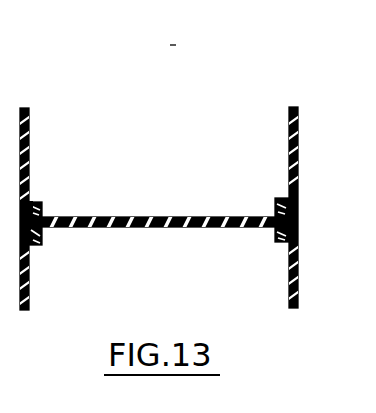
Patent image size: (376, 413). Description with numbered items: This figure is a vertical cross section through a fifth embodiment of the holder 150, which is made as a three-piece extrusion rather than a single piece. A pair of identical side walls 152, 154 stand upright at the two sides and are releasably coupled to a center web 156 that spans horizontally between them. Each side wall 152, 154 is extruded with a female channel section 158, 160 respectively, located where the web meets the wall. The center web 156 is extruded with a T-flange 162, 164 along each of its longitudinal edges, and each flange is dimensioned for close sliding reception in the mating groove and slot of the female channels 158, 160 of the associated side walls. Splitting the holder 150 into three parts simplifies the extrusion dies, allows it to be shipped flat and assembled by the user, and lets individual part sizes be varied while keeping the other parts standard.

The holder 150 is at (168, 158).
The side wall 152 is at (40, 150).
The side wall 154 is at (286, 137).
The center web 156 is at (149, 204).
The female channel section 158 is at (44, 250).
The female channel section 160 is at (272, 246).
The T-flange 162 is at (32, 204).
The T-flange 164 is at (297, 204).